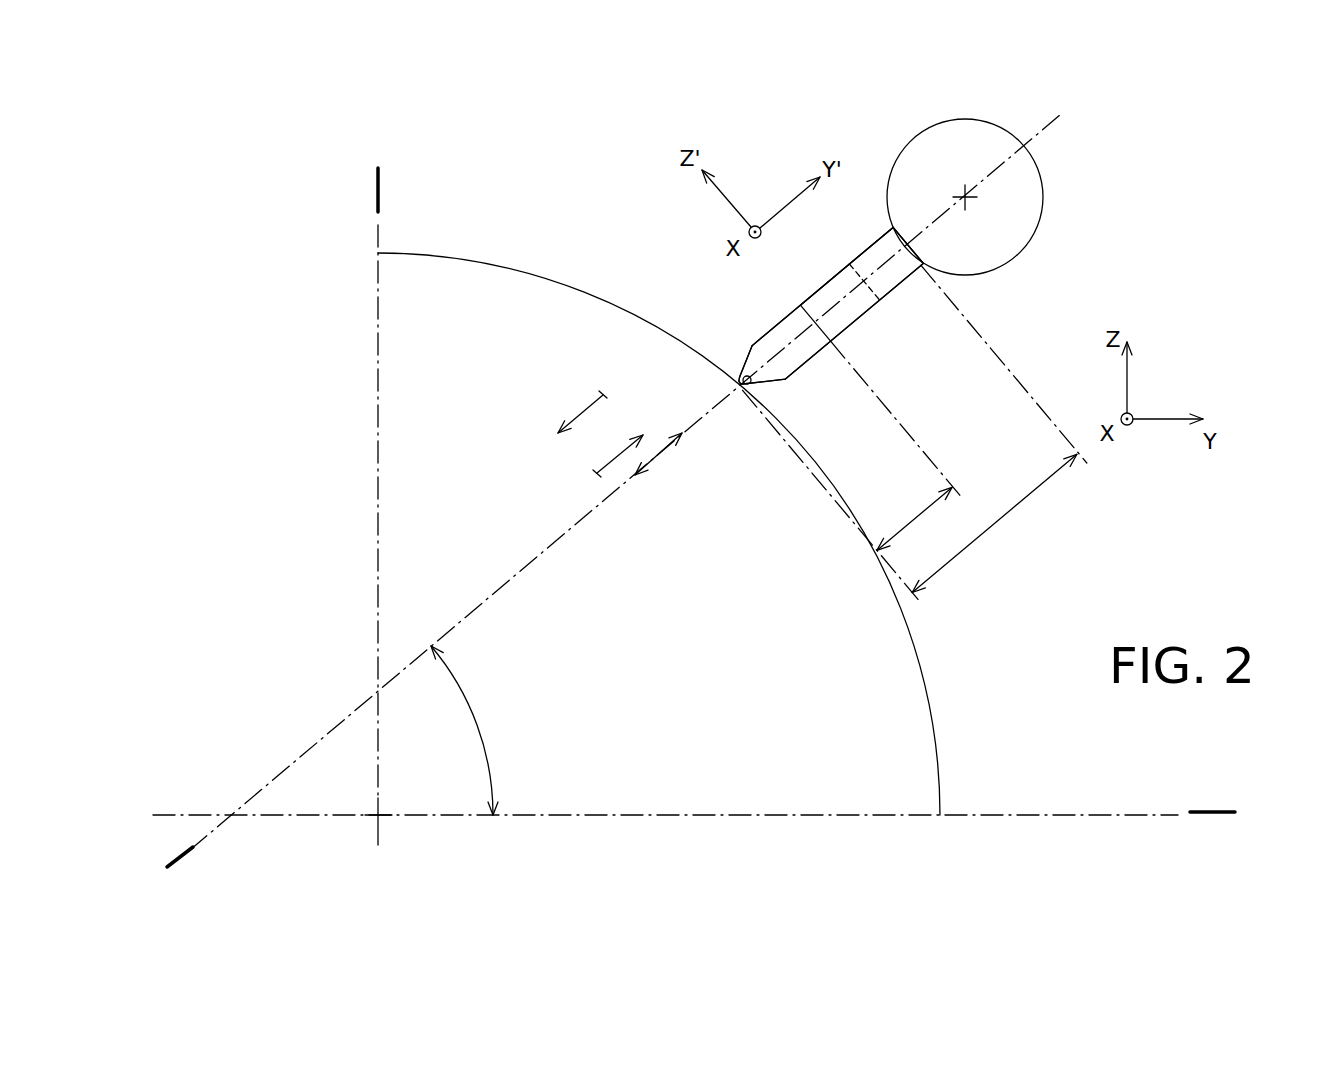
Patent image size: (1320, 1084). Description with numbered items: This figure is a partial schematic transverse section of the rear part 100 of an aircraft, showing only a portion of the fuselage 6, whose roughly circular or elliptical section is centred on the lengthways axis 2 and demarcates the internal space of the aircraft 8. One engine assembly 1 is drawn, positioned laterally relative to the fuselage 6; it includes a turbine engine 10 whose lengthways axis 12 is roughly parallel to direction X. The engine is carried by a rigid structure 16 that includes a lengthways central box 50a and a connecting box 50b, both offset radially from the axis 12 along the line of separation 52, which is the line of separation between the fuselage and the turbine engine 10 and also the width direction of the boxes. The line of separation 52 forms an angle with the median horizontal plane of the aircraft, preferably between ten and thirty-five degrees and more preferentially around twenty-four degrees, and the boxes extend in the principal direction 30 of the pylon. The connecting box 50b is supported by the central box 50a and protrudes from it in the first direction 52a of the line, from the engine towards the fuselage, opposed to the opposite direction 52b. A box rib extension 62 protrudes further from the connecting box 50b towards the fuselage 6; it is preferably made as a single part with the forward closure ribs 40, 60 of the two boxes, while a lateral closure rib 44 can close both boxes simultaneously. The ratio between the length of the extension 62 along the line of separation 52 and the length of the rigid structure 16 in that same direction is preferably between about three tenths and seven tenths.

The engine assembly 1 is at (948, 347).
The lengthways axis 2 is at (383, 813).
The fuselage 6 is at (533, 273).
The internal space of the aircraft 8 is at (640, 637).
The turbine engine 10 is at (1044, 211).
The lengthways axis of the turbine engine 12 is at (960, 190).
The rigid structure 16 is at (843, 318).
The principal direction 30 is at (757, 372).
The forward closure rib 40 is at (925, 266).
The lateral closure rib 44 is at (893, 229).
The lengthways central box 50a is at (873, 257).
The connecting box 50b is at (832, 292).
The line of separation 52 is at (660, 458).
The first direction of the line of separation 52a is at (600, 397).
The opposite direction of the line of separation 52b is at (604, 462).
The forward closure rib 60 is at (851, 345).
The box rib extension 62 is at (777, 330).
The rear part 100 is at (298, 410).